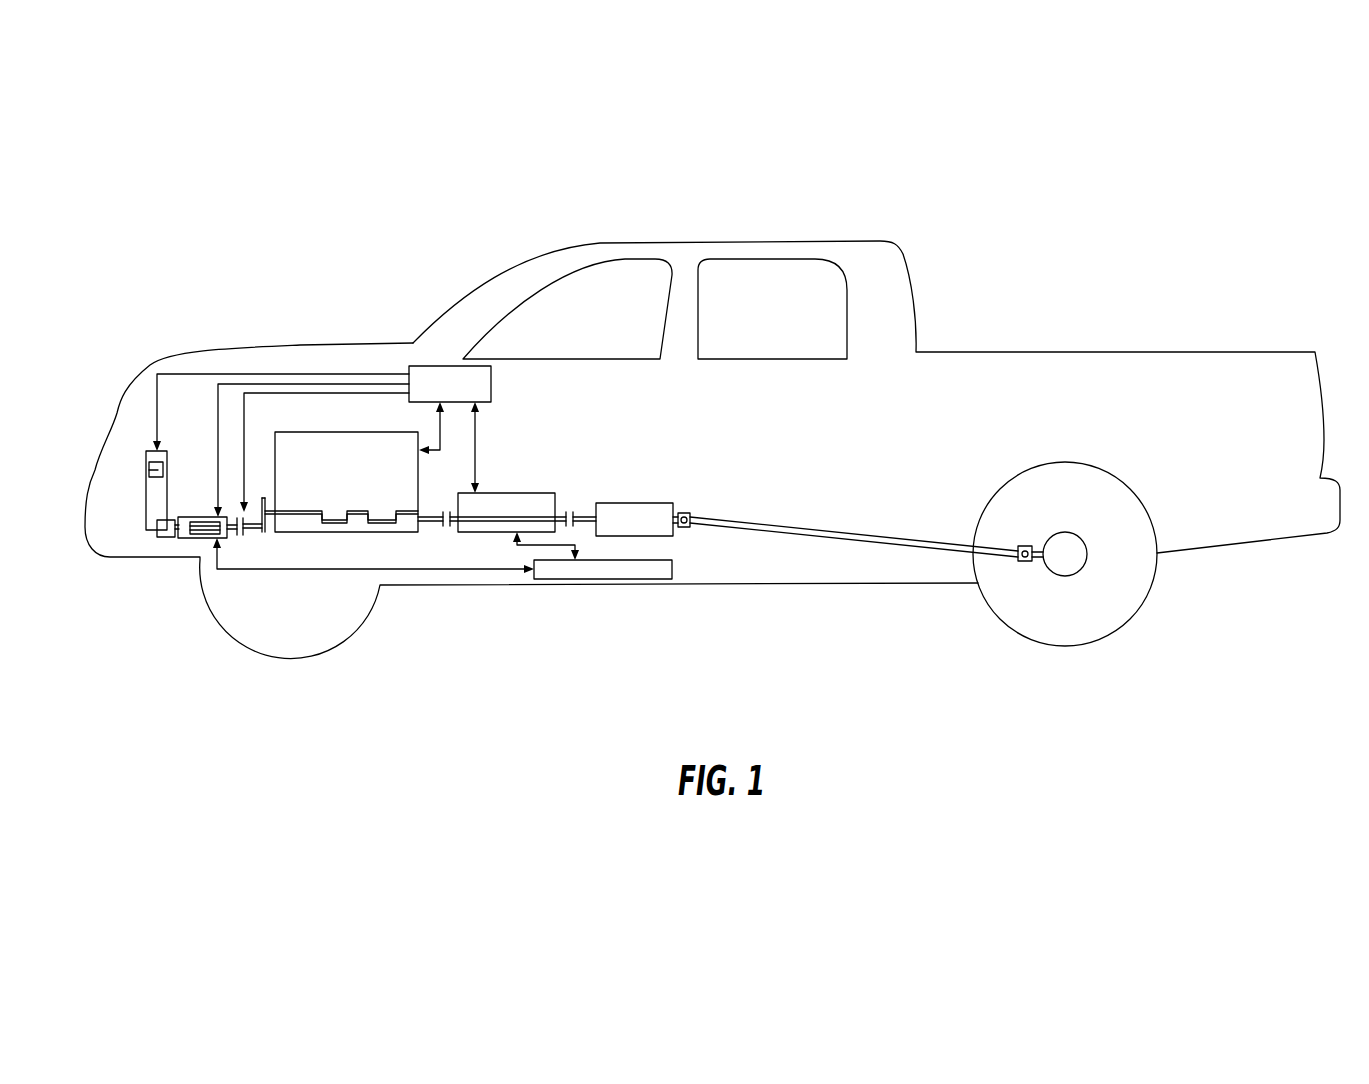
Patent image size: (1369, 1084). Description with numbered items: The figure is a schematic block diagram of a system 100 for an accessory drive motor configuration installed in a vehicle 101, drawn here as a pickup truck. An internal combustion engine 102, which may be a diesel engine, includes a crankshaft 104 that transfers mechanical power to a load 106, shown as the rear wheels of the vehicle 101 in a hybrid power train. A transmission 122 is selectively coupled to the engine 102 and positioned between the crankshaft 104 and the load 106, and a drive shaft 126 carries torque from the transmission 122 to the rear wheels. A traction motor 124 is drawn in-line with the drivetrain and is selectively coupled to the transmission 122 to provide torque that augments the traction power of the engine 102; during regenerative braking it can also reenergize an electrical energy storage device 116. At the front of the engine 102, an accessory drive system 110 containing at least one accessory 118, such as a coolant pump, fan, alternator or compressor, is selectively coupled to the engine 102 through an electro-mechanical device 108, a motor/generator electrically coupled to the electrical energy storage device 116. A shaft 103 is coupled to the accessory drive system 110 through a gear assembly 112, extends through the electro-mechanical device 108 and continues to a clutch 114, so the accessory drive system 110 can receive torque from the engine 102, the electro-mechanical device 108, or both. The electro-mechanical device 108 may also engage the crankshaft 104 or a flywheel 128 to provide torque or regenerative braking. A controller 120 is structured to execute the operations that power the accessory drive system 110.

The system 100 is at (238, 246).
The vehicle 101 is at (870, 241).
The internal combustion engine 102 is at (390, 535).
The shaft 103 is at (230, 537).
The crankshaft 104 is at (353, 508).
The load 106 is at (1158, 648).
The electro-mechanical device 108 is at (205, 517).
The accessory drive system 110 is at (146, 457).
The gear assembly 112 is at (165, 537).
The clutch 114 is at (242, 534).
The electrical energy storage device 116 is at (602, 570).
The accessory 118 is at (147, 470).
The controller 120 is at (470, 398).
The transmission 122 is at (655, 533).
The traction motor 124 is at (520, 493).
The drive shaft 126 is at (814, 523).
The flywheel 128 is at (265, 497).